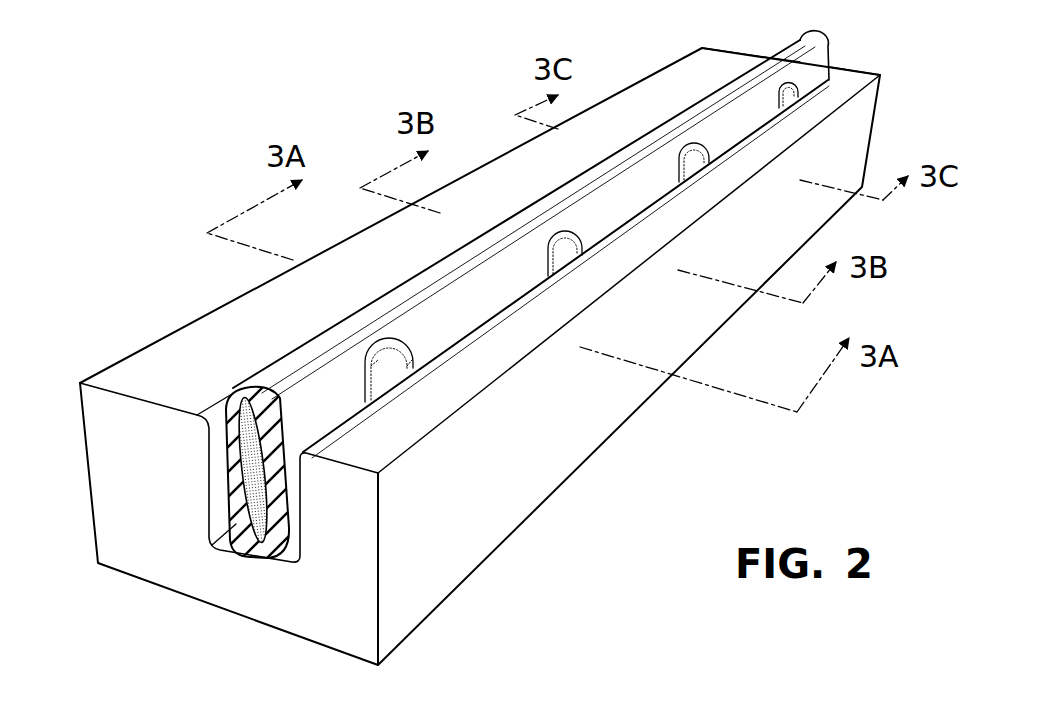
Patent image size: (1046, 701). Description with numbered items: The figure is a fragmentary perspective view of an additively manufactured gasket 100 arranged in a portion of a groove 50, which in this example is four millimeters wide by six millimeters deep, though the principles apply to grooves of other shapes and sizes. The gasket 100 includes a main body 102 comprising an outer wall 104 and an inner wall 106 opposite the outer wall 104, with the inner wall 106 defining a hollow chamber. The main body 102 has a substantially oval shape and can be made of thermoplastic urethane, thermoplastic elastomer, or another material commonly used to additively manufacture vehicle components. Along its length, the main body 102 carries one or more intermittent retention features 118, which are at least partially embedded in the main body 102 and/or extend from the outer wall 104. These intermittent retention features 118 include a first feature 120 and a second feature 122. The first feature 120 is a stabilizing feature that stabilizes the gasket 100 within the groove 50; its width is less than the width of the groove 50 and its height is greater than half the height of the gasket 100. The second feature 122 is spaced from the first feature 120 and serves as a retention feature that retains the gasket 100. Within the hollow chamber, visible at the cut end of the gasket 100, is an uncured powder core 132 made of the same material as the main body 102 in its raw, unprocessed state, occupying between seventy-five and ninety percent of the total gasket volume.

The groove 50 is at (460, 356).
The gasket 100 is at (543, 353).
The main body 102 is at (355, 400).
The outer wall 104 is at (307, 425).
The inner wall 106 is at (260, 520).
The intermittent retention features 118 is at (654, 233).
The first feature 120 is at (574, 254).
The second feature 122 is at (398, 376).
The uncured powder core 132 is at (253, 448).